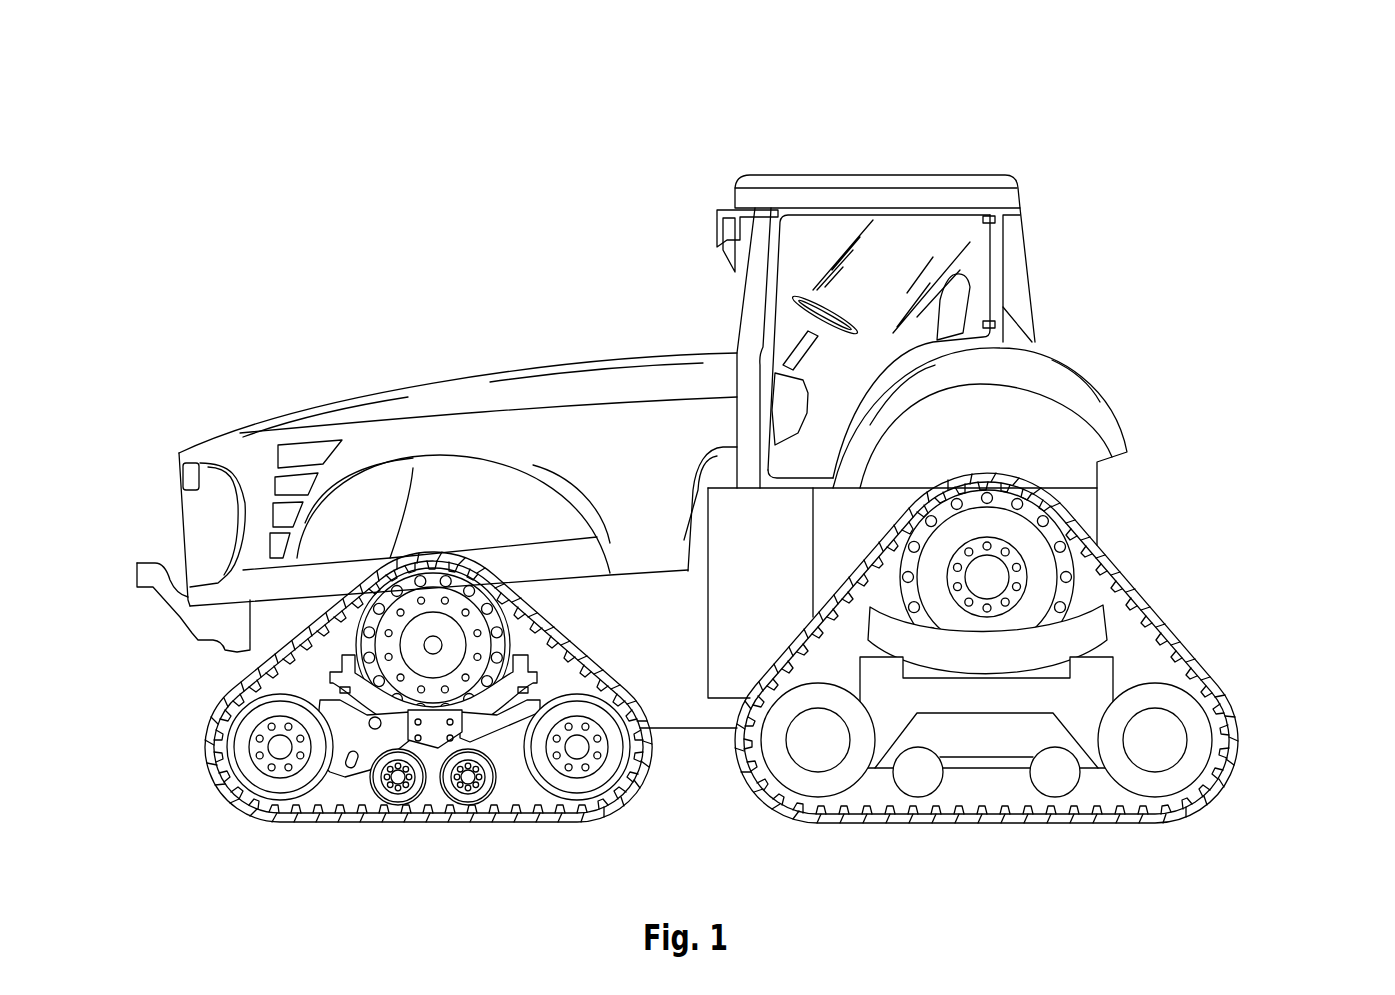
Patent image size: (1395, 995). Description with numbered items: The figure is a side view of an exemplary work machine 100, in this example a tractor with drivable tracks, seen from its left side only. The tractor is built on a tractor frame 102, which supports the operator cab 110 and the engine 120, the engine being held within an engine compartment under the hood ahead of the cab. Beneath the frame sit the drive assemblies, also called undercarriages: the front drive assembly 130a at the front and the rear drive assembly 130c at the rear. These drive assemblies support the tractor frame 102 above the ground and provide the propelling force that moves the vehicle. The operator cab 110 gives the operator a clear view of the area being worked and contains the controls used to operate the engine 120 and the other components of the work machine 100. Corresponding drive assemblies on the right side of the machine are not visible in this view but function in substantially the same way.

The work machine 100 is at (495, 165).
The tractor frame 102 is at (572, 568).
The operator cab 110 is at (937, 174).
The engine 120 is at (448, 390).
The front drive assembly 130a is at (208, 775).
The rear drive assembly 130c is at (1232, 773).